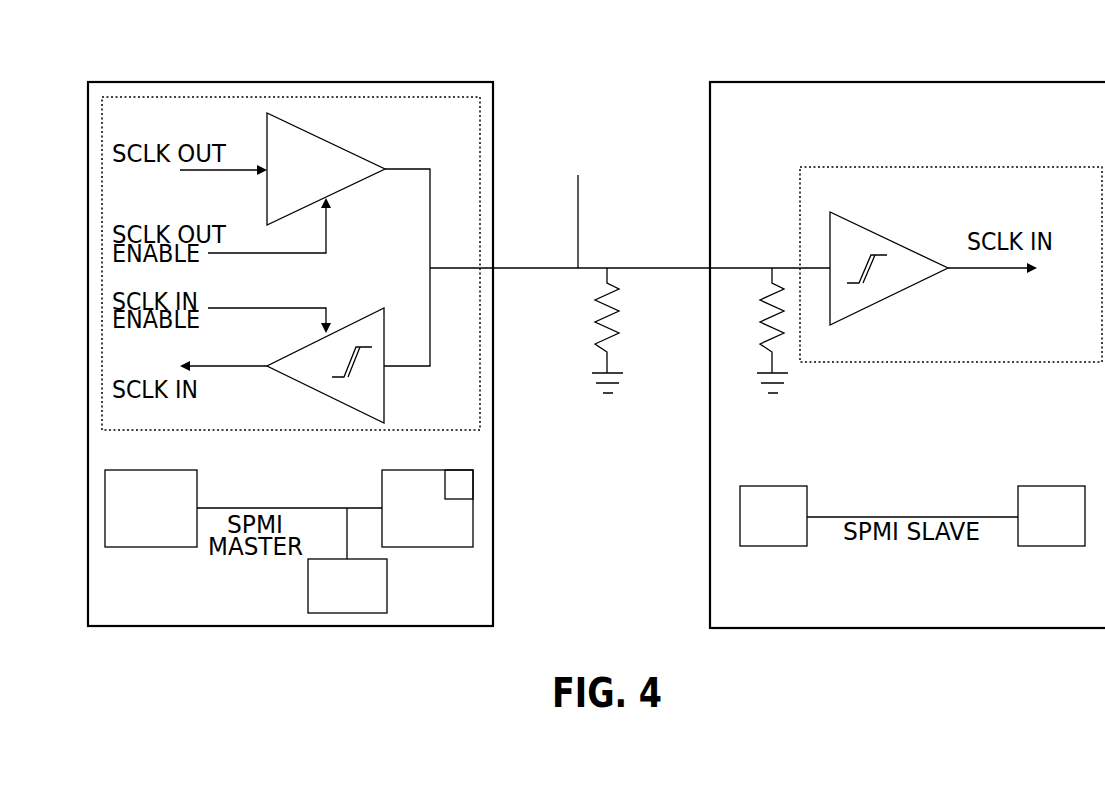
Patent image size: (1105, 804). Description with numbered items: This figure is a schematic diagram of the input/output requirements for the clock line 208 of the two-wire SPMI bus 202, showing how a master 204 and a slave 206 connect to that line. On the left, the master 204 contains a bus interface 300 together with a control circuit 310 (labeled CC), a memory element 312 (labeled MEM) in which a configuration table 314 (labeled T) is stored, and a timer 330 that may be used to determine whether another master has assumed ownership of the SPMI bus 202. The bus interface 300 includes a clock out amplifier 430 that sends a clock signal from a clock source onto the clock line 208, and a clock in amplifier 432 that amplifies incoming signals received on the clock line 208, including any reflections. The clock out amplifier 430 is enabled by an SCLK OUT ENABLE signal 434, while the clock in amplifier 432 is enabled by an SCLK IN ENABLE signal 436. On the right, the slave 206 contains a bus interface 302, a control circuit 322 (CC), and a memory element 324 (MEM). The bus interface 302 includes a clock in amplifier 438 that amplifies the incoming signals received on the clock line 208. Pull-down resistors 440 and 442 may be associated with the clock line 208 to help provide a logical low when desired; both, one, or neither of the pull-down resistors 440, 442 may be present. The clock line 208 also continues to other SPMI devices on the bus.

The two-wire SPMI bus 202 is at (590, 76).
The master 204 is at (302, 82).
The slave 206 is at (925, 82).
The clock line 208 is at (528, 270).
The bus interface 300 is at (428, 97).
The bus interface 302 is at (1058, 167).
The control circuit 310 is at (150, 547).
The memory element 312 is at (473, 530).
The configuration table 314 is at (473, 483).
The control circuit 322 is at (1048, 546).
The memory element 324 is at (773, 546).
The timer 330 is at (348, 613).
The clock out amplifier 430 is at (328, 142).
The clock in amplifier 432 is at (318, 391).
The SCLK OUT ENABLE signal 434 is at (330, 253).
The SCLK IN ENABLE signal 436 is at (262, 308).
The clock in amplifier 438 is at (898, 292).
The pull-down resistor 440 is at (760, 347).
The pull-down resistor 442 is at (612, 352).